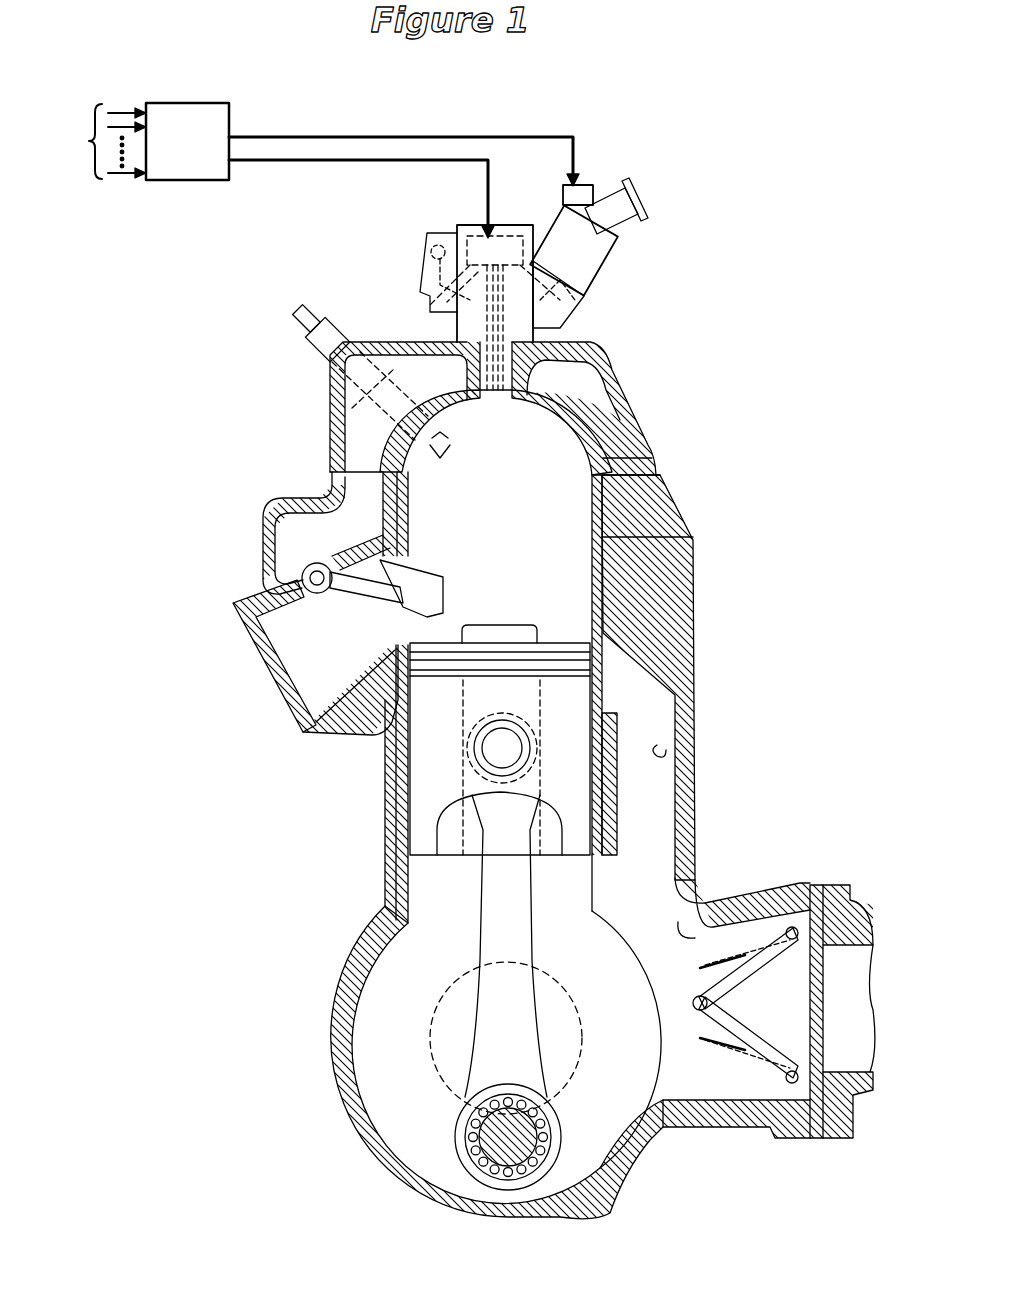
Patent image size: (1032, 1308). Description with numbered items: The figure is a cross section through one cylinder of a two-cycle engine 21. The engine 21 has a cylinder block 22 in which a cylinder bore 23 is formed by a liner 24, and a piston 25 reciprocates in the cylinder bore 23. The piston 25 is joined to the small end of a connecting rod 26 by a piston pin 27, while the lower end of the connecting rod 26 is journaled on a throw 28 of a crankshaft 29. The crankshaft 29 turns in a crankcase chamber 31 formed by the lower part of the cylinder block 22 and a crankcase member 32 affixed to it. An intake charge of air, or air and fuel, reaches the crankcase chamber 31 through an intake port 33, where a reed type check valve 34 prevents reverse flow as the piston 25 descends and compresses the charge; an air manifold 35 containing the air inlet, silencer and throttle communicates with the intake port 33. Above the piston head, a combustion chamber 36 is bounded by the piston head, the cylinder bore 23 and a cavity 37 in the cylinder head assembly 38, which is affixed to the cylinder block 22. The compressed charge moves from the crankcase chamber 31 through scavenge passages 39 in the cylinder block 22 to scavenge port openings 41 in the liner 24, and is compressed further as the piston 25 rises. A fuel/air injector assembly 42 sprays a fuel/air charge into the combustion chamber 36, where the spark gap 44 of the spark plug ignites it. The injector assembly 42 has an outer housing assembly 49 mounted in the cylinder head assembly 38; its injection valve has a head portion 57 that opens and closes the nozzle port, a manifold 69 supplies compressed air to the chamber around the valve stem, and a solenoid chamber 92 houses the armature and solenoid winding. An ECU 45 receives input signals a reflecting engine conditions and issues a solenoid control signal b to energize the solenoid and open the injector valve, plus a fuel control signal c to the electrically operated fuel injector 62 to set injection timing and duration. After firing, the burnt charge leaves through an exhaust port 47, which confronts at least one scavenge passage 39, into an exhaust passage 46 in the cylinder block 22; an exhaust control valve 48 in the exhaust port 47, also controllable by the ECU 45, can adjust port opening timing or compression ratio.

The engine 21 is at (730, 445).
The cylinder block 22 is at (705, 607).
The cylinder bore 23 is at (588, 573).
The liner 24 is at (697, 543).
The piston 25 is at (405, 800).
The connecting rod 26 is at (535, 937).
The piston pin 27 is at (512, 735).
The throw 28 is at (470, 1170).
The crankshaft 29 is at (430, 1060).
The crankcase chamber 31 is at (372, 975).
The crankcase member 32 is at (328, 1044).
The intake port 33 is at (727, 905).
The reed type check valve 34 is at (747, 1070).
The air manifold 35 is at (832, 887).
The combustion chamber 36 is at (522, 547).
The cavity 37 is at (600, 443).
The cylinder head assembly 38 is at (292, 450).
The scavenge passages 39 is at (662, 752).
The scavenge port openings 41 is at (585, 635).
The fuel/air injector assembly 42 is at (606, 168).
The spark gap 44 is at (440, 457).
The ECU 45 is at (167, 103).
The exhaust passage 46 is at (330, 680).
The exhaust port 47 is at (403, 640).
The exhaust control valve 48 is at (340, 643).
The outer housing assembly 49 is at (290, 360).
The head portion 57 is at (495, 392).
The fuel injector 62 is at (632, 244).
The manifold 69 is at (425, 278).
The solenoid chamber 92 is at (505, 235).
The input signals a is at (98, 141).
The solenoid control signal b is at (349, 160).
The fuel control signal c is at (347, 137).